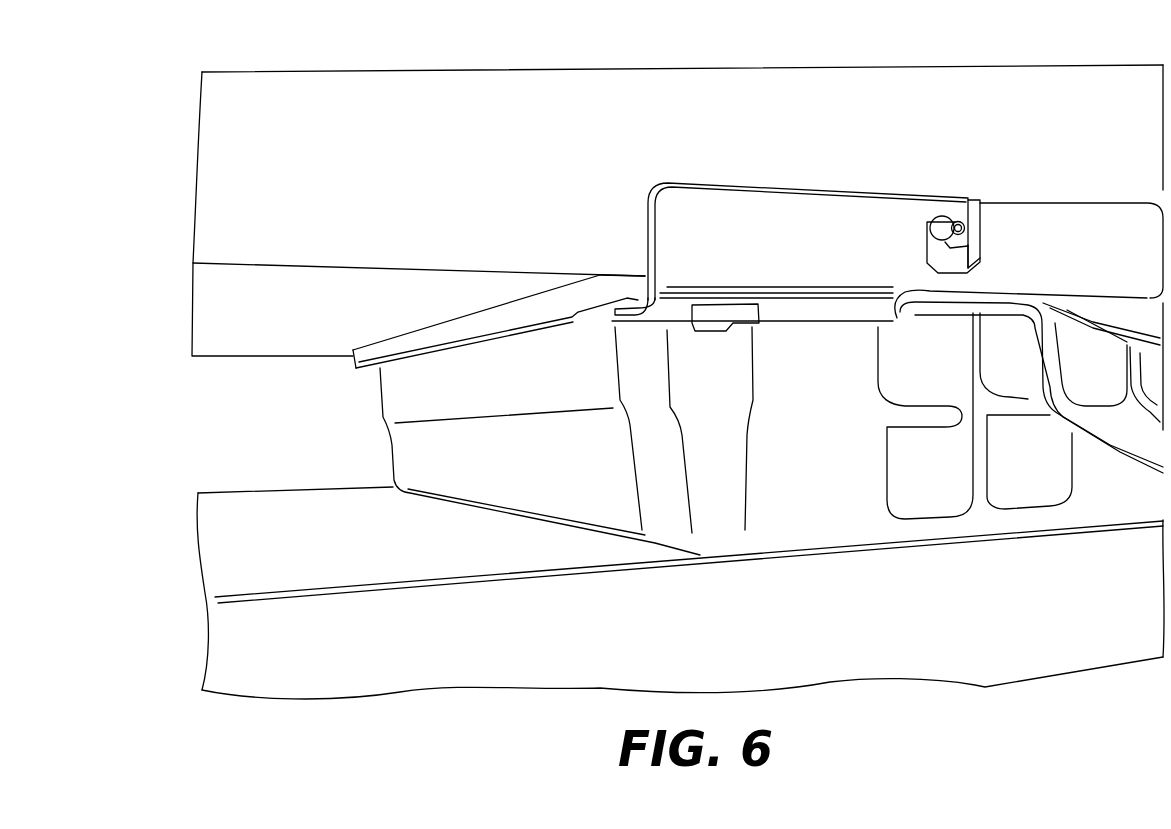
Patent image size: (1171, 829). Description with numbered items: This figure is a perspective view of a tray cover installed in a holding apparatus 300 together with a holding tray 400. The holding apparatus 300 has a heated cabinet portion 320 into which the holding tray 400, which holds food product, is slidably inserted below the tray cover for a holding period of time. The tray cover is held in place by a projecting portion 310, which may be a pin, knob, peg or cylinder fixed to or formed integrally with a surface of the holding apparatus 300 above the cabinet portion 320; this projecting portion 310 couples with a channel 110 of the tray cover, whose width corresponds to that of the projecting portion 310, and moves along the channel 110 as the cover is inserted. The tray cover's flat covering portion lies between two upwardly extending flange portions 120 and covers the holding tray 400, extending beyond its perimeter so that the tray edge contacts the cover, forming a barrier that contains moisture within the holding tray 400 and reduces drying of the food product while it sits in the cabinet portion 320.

The holding apparatus 300 is at (366, 124).
The cabinet portion 320 is at (270, 554).
The holding tray 400 is at (570, 365).
The flange portions 120 is at (760, 210).
The projecting portion 310 is at (940, 223).
The channel 110 is at (972, 216).